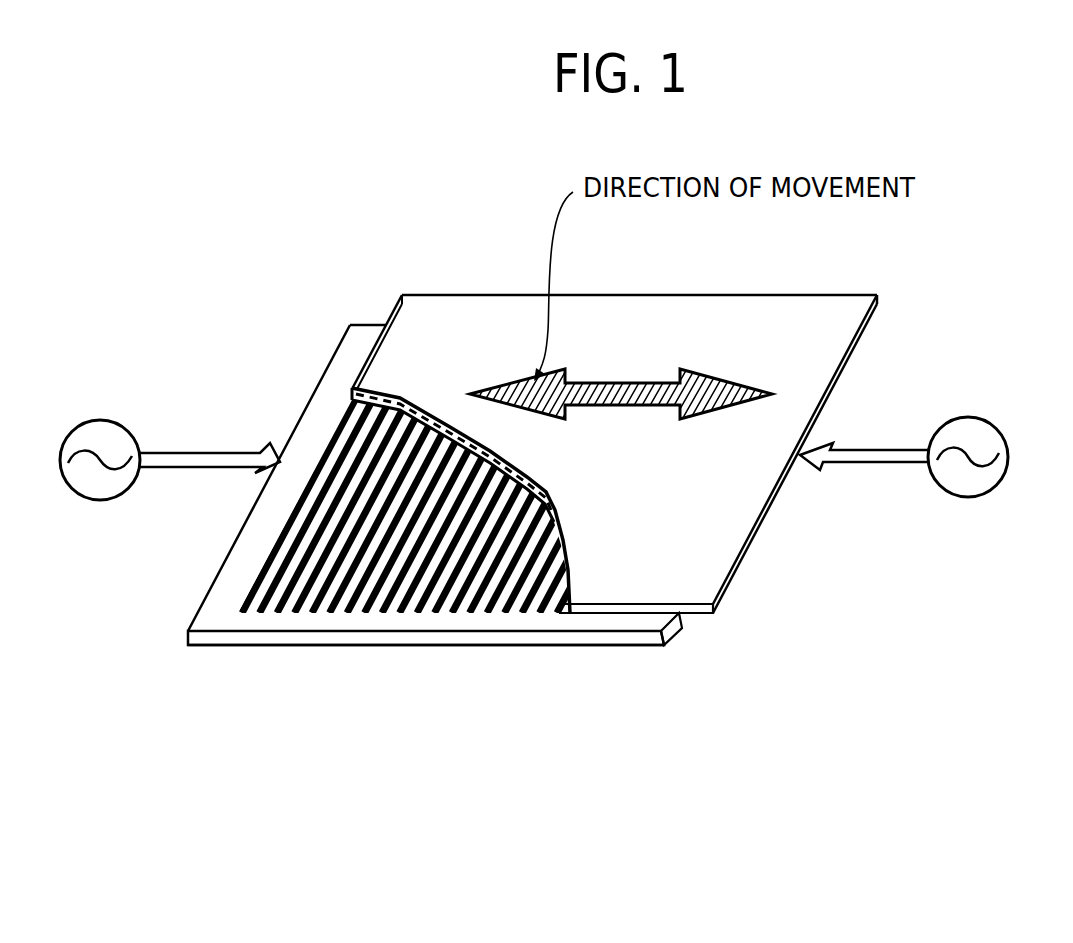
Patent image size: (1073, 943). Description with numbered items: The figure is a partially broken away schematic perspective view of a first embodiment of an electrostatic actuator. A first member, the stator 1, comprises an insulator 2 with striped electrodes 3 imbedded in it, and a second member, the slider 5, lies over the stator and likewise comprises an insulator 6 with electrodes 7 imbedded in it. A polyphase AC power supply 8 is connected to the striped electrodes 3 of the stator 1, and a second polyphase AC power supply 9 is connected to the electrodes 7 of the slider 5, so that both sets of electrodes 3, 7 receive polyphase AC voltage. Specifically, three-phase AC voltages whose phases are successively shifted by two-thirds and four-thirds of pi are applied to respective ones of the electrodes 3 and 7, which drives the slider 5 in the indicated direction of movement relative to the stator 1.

The first member (stator) 1 is at (382, 653).
The insulator 2 is at (185, 629).
The striped electrodes 3 is at (247, 595).
The second member (slider) 5 is at (752, 292).
The insulator 6 is at (716, 611).
The electrodes 7 is at (387, 392).
The polyphase AC power supply 8 is at (97, 500).
The polyphase AC power supply 9 is at (972, 497).